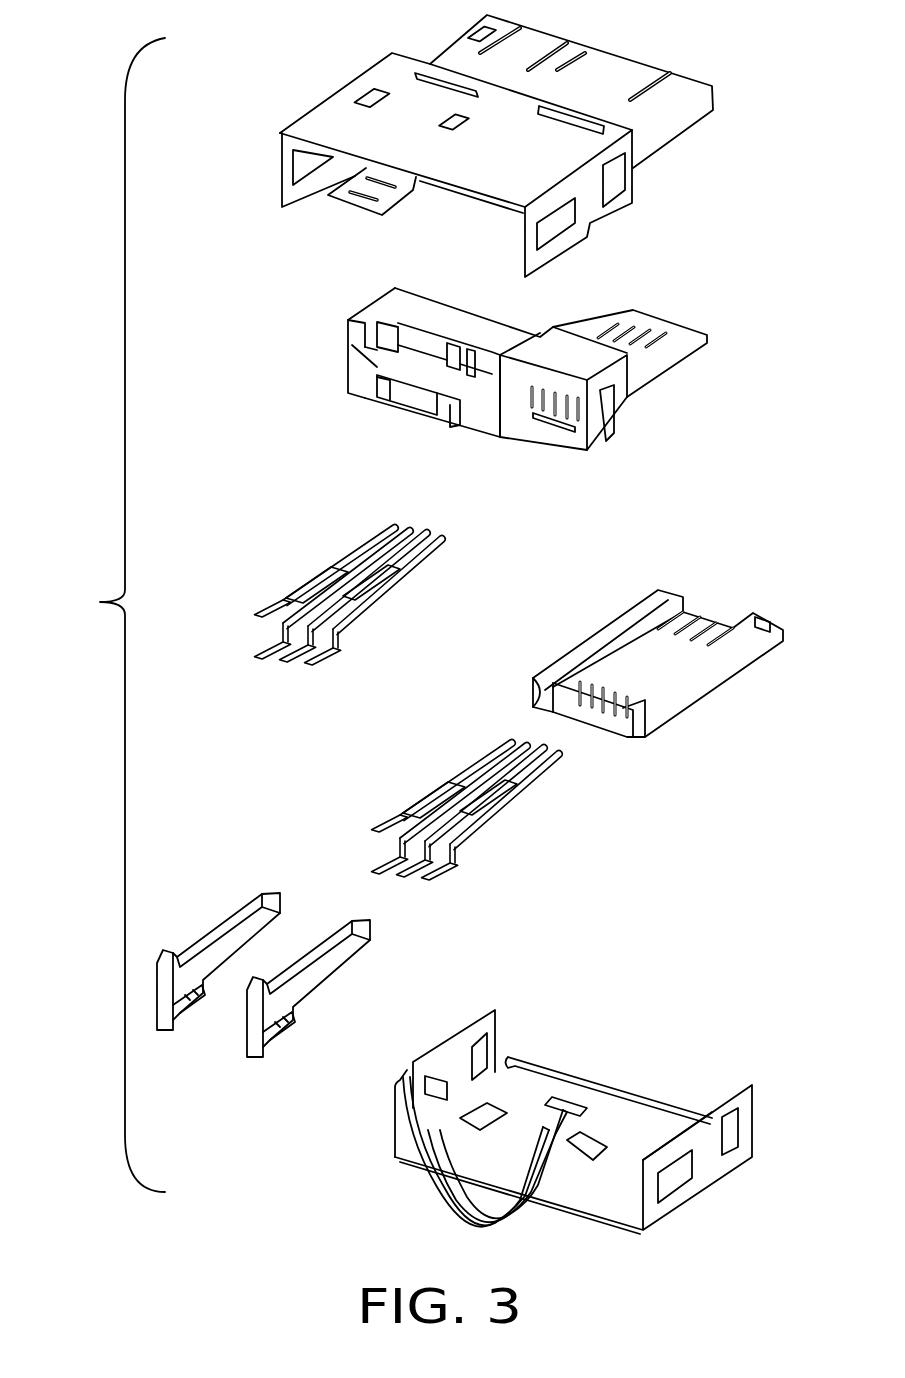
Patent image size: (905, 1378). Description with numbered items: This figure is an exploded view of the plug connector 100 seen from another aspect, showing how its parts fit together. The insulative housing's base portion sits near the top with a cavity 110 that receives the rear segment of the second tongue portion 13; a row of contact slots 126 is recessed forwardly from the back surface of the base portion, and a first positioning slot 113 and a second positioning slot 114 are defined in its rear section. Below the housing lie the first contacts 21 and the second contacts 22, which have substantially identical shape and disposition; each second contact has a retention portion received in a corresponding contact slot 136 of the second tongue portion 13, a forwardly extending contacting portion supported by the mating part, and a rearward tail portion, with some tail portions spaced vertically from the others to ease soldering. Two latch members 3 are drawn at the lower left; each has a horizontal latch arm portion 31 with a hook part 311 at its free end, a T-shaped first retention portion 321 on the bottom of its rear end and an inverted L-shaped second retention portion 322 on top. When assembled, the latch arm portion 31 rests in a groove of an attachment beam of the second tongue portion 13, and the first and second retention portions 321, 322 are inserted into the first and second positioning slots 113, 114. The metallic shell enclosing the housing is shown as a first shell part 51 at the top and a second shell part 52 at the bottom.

The plug connector 100 is at (99, 615).
The first shell part 51 is at (328, 73).
The cavity 110 is at (469, 387).
The second positioning slot 114 is at (372, 332).
The first positioning slot 113 is at (372, 388).
The contact slots 126 is at (557, 402).
The first contacts 21 is at (305, 543).
The second contacts 22 is at (418, 765).
The second tongue portion 13 is at (625, 684).
The contact slot 136 is at (625, 704).
The latch member 3 is at (295, 976).
The latch arm portion 31 is at (318, 968).
The hook part 311 is at (360, 930).
The second retention portion 322 is at (262, 992).
The first retention portion 321 is at (273, 1032).
The second shell part 52 is at (623, 1063).